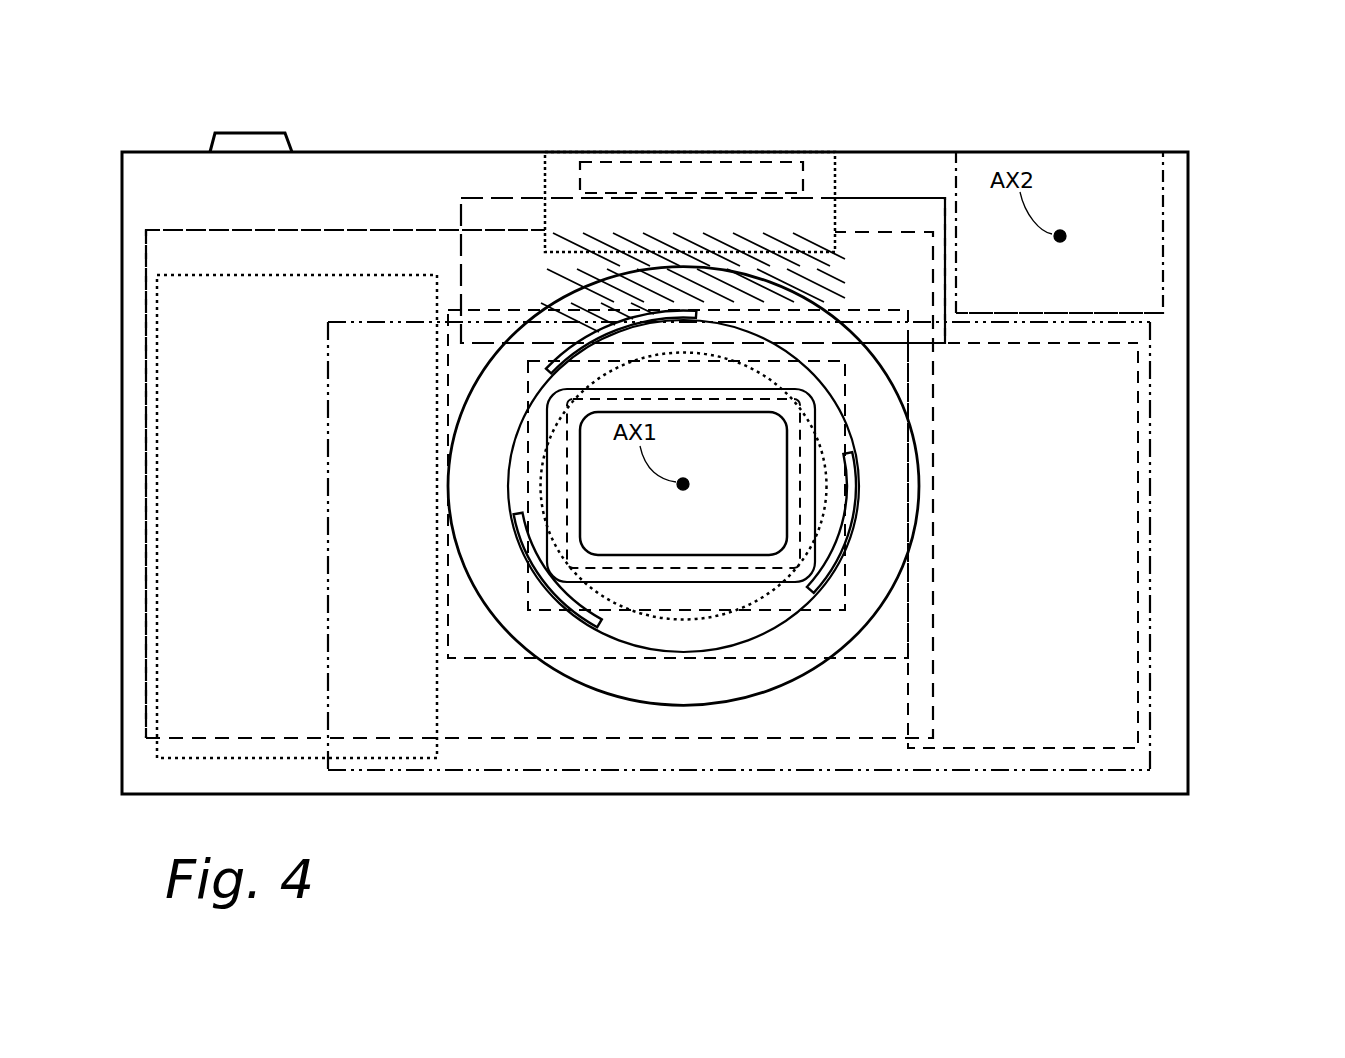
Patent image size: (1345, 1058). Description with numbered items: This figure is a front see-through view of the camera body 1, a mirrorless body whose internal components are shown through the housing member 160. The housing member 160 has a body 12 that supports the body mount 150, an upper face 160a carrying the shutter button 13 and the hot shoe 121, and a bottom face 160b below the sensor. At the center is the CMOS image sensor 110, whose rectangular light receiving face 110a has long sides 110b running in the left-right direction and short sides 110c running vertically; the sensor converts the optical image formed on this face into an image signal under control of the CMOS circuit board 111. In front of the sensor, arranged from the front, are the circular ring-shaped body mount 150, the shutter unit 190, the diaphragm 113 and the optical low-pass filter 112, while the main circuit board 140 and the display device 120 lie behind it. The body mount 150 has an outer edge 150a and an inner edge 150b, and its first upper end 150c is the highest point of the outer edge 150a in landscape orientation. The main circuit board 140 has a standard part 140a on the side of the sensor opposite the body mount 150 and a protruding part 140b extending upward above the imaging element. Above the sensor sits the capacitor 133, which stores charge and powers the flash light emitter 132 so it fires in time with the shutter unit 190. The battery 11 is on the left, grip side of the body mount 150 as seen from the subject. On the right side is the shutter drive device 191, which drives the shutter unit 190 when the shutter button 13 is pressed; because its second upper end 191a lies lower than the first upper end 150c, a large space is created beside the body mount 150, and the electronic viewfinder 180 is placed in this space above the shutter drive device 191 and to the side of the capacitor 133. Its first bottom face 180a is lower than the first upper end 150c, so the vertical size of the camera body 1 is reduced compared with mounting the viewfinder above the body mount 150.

The camera body 1 is at (712, 122).
The battery 11 is at (223, 313).
The body 12 is at (757, 622).
The shutter button 13 is at (251, 130).
The CMOS image sensor 110 is at (810, 466).
The light receiving face 110a is at (712, 573).
The long sides 110b is at (644, 398).
The short sides 110c is at (818, 442).
The CMOS circuit board 111 is at (843, 393).
The optical low-pass filter 112 is at (800, 497).
The diaphragm 113 is at (627, 545).
The display device 120 is at (327, 772).
The hot shoe 121 is at (630, 153).
The flash light emitter 132 is at (562, 148).
The capacitor 133 is at (865, 210).
The main circuit board 140 is at (932, 368).
The standard part 140a is at (463, 364).
The protruding part 140b is at (560, 276).
The body mount 150 is at (505, 600).
The outer edge 150a is at (455, 412).
The inner edge 150b is at (508, 493).
The first upper end 150c is at (690, 300).
The housing member 160 is at (1192, 658).
The upper face 160a is at (958, 158).
The bottom face 160b is at (1138, 772).
The electronic viewfinder 180 is at (1114, 163).
The first bottom face 180a is at (1087, 313).
The shutter unit 190 is at (890, 642).
The shutter drive device 191 is at (1112, 693).
The second upper end 191a is at (1087, 347).